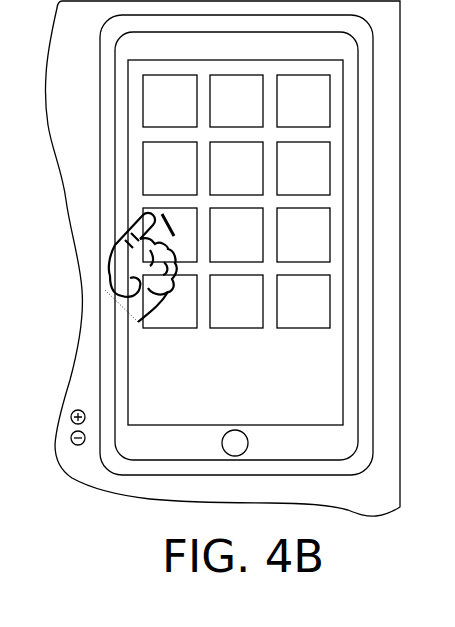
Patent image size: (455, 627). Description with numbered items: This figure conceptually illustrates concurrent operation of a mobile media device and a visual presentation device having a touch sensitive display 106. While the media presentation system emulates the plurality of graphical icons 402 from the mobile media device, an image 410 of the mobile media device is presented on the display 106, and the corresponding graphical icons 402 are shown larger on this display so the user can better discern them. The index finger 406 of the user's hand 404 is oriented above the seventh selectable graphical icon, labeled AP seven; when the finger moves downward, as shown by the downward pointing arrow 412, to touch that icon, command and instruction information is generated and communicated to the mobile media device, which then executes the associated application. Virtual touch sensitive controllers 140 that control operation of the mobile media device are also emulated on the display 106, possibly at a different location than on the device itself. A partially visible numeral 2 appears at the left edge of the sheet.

The display 106 is at (378, 505).
The partial numeral 2 is at (4, 120).
The image of the mobile media device 410 is at (66, 50).
The virtual touch sensitive controllers 140 is at (70, 460).
The graphical icons 402 is at (245, 349).
The downward pointing arrow 412 is at (172, 232).
The index finger 406 is at (128, 226).
The user's hand 404 is at (112, 288).